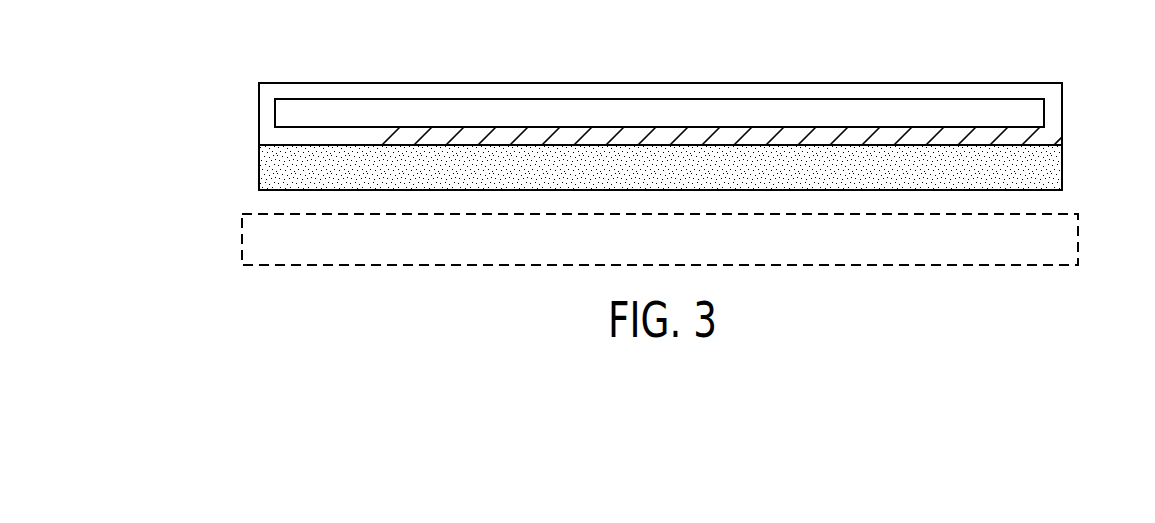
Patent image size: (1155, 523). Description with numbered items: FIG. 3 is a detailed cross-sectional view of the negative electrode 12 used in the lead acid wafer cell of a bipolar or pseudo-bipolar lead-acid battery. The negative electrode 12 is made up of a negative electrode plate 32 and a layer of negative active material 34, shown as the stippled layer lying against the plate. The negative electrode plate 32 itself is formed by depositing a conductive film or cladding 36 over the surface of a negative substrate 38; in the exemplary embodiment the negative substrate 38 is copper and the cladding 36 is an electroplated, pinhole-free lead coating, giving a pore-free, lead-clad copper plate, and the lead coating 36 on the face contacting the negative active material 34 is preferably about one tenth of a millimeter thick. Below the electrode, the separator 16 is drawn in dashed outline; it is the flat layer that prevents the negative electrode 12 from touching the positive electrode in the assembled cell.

The negative electrode 12 is at (772, 58).
The separator 16 is at (1060, 235).
The negative electrode plate 32 is at (221, 135).
The negative active material 34 is at (1050, 165).
The conductive film or cladding 36 is at (973, 92).
The negative substrate 38 is at (1031, 110).